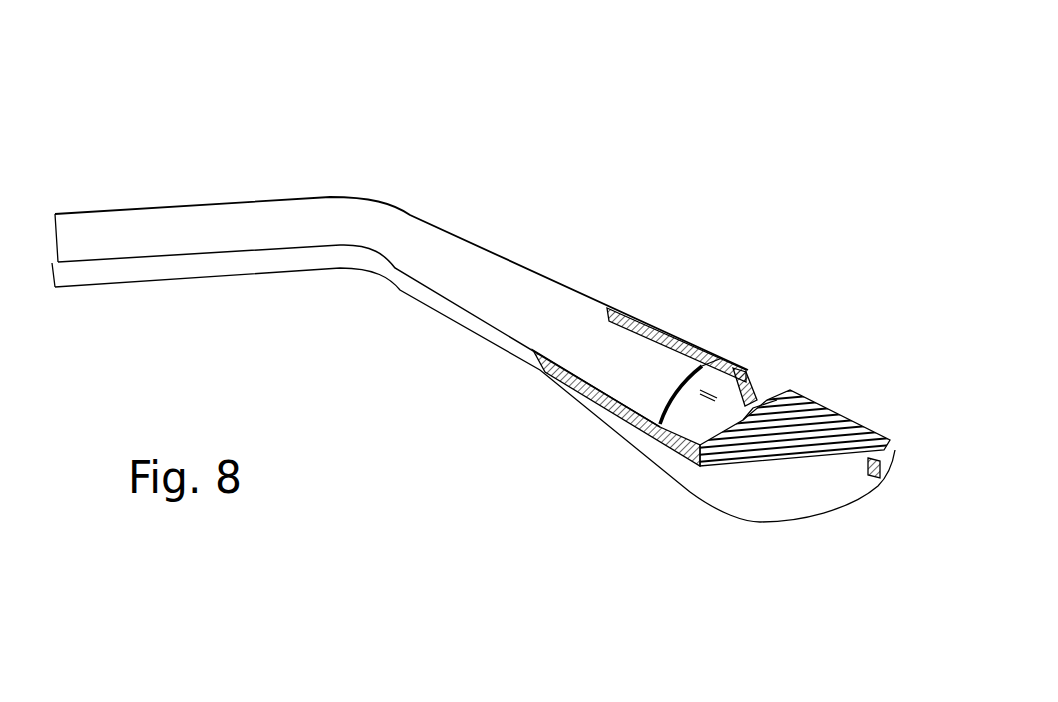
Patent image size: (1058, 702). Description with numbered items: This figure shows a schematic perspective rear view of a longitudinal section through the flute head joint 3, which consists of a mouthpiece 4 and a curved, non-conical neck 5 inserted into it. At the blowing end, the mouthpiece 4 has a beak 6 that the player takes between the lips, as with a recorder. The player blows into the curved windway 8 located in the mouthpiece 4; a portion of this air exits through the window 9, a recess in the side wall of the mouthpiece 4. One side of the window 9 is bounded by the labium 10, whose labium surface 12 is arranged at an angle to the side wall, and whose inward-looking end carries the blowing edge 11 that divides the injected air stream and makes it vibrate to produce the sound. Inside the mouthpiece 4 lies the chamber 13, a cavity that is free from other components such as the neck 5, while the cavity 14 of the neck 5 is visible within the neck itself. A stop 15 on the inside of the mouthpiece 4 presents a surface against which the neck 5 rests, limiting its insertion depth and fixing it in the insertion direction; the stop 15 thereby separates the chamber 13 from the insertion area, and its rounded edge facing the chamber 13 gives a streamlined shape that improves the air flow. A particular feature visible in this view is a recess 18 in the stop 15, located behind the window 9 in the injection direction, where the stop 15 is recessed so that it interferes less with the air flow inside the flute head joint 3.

The flute head joint 3 is at (548, 110).
The mouthpiece 4 is at (562, 488).
The neck 5 is at (225, 182).
The beak 6 is at (850, 480).
The windway 8 is at (860, 440).
The window 9 is at (781, 378).
The labium 10 is at (717, 345).
The blowing edge 11 is at (738, 400).
The labium surface 12 is at (725, 352).
The chamber 13 is at (693, 430).
The cavity 14 is at (378, 237).
The stop 15 is at (643, 408).
The recess 18 is at (707, 382).